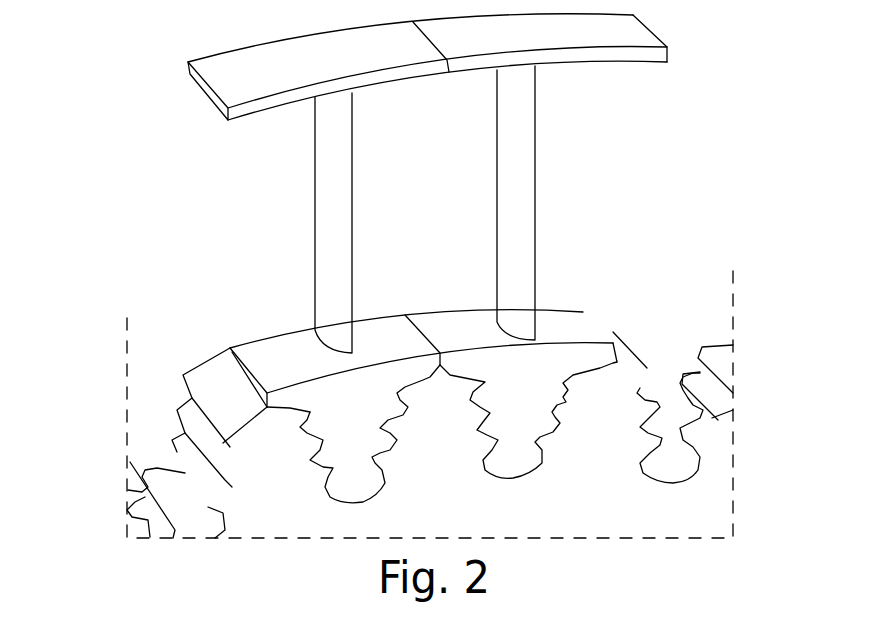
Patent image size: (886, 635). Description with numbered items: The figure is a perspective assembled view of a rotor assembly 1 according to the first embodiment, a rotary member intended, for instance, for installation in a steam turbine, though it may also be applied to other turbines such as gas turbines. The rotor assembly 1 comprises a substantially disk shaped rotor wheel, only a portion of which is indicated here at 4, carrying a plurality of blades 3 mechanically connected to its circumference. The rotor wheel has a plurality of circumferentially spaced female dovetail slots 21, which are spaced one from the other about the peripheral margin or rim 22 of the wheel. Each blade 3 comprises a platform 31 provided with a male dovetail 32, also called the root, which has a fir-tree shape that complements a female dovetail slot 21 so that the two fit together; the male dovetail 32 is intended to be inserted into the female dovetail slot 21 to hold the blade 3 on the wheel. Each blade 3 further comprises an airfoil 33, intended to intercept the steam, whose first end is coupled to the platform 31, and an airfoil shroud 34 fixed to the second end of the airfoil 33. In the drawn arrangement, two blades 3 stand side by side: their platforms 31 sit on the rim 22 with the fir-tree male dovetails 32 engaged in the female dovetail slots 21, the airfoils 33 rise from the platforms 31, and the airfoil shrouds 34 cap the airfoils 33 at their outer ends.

The rotor assembly 1 is at (142, 67).
The blade 3 is at (160, 212).
The rotor disc 4 is at (665, 533).
The female dovetail slot 21 is at (672, 357).
The rim 22 is at (583, 312).
The platform 31 is at (230, 348).
The male dovetail 32 is at (343, 450).
The airfoil 33 is at (313, 222).
The airfoil shroud 34 is at (200, 88).